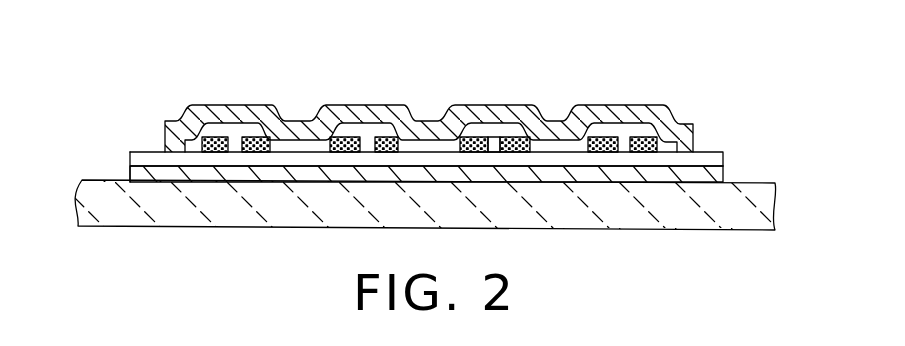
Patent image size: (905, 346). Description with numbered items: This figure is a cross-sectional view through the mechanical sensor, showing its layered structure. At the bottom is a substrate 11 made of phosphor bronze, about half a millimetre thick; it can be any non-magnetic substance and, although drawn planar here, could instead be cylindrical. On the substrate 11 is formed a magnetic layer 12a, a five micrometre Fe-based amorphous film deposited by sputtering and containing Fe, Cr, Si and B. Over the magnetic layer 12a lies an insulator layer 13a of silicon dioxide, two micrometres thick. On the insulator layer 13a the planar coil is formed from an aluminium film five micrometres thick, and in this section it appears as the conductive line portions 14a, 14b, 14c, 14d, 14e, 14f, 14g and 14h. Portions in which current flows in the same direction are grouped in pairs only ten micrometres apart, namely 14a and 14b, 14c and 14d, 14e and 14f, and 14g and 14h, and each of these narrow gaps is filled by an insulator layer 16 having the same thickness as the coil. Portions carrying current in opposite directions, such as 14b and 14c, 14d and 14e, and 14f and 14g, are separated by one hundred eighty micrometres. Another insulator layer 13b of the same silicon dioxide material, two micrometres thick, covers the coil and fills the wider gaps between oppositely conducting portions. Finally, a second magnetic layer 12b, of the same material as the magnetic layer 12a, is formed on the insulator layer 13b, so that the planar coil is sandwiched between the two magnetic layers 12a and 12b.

The substrate 11 is at (722, 225).
The magnetic layer 12a is at (140, 173).
The magnetic layer 12b is at (167, 121).
The insulator layer 13a is at (717, 163).
The insulator layer 13b is at (692, 152).
The conductive line portion 14a is at (212, 137).
The conductive line portion 14b is at (256, 137).
The conductive line portion 14c is at (343, 137).
The conductive line portion 14d is at (382, 137).
The conductive line portion 14e is at (472, 137).
The conductive line portion 14f is at (527, 137).
The conductive line portion 14g is at (608, 143).
The conductive line portion 14h is at (648, 140).
The insulator layer 16 is at (500, 123).